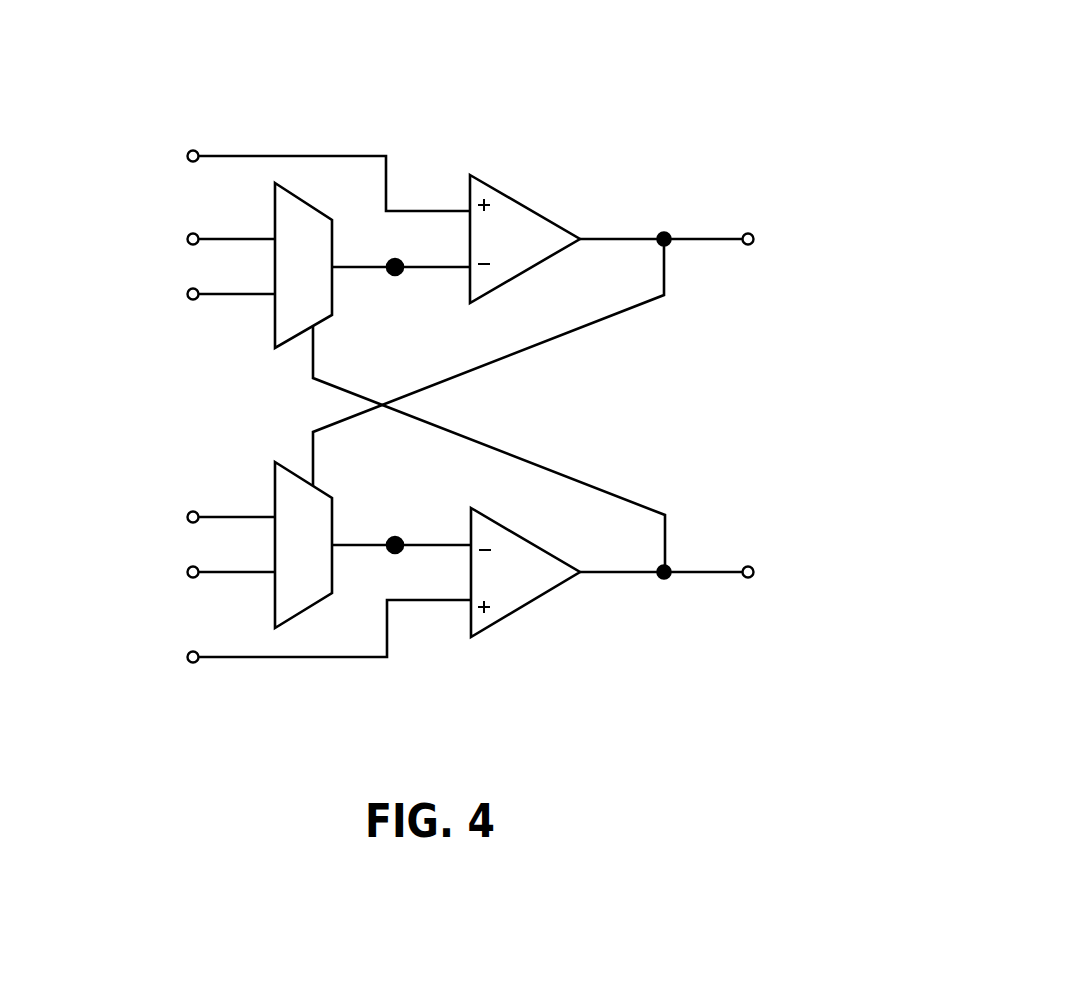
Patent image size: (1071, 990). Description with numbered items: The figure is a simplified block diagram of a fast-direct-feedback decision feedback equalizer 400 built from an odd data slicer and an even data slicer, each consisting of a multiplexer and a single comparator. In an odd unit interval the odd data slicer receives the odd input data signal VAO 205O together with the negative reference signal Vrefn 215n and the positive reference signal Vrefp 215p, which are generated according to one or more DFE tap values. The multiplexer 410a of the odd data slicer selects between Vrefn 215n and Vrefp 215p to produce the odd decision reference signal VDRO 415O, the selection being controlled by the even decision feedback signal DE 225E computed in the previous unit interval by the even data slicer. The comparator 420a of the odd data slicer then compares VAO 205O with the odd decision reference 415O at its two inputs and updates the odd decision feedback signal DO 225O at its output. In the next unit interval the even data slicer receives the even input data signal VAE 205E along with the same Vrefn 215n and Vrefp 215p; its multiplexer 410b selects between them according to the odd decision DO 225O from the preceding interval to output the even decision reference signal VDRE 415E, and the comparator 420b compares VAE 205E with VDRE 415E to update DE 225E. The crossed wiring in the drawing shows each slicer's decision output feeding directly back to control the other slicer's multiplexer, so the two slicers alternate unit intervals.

The fast-direct-feedback DFE 400 is at (663, 54).
The odd input data signal 205O is at (177, 166).
The even input data signal 205E is at (179, 666).
The negative reference signal 215n is at (173, 584).
The positive reference signal 215p is at (173, 528).
The multiplexer of the odd data slicer 410a is at (276, 324).
The multiplexer of the even data slicer 410b is at (276, 487).
The odd decision reference signal 415O is at (422, 336).
The even decision reference signal 415E is at (422, 526).
The comparator of the odd data slicer 420a is at (513, 198).
The comparator of the even data slicer 420b is at (513, 612).
The odd decision feedback signal 225O is at (820, 266).
The even decision feedback signal 225E is at (817, 598).